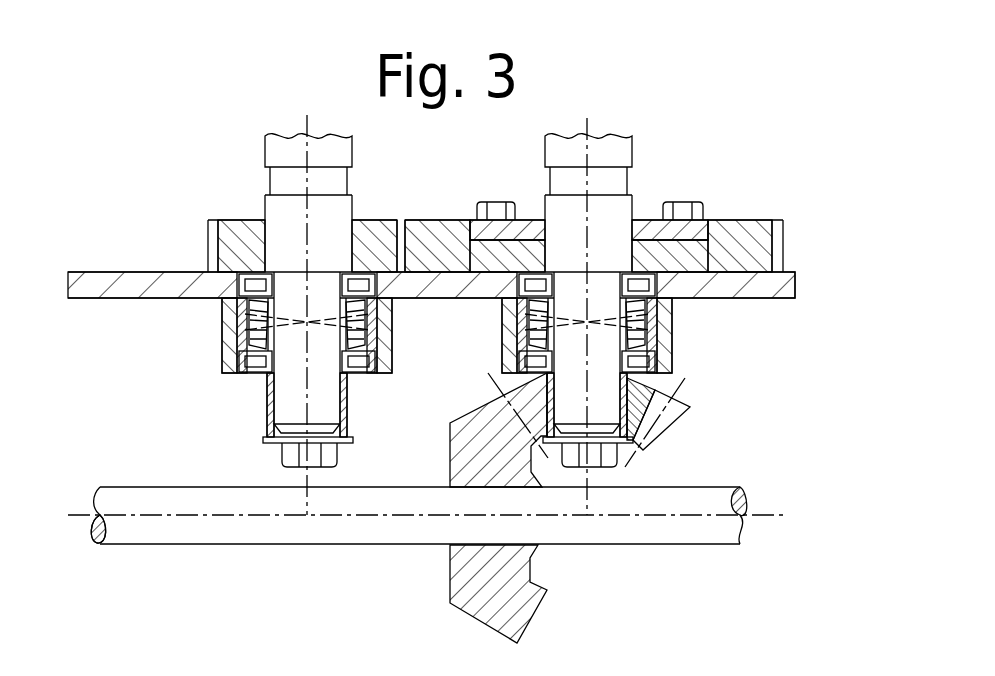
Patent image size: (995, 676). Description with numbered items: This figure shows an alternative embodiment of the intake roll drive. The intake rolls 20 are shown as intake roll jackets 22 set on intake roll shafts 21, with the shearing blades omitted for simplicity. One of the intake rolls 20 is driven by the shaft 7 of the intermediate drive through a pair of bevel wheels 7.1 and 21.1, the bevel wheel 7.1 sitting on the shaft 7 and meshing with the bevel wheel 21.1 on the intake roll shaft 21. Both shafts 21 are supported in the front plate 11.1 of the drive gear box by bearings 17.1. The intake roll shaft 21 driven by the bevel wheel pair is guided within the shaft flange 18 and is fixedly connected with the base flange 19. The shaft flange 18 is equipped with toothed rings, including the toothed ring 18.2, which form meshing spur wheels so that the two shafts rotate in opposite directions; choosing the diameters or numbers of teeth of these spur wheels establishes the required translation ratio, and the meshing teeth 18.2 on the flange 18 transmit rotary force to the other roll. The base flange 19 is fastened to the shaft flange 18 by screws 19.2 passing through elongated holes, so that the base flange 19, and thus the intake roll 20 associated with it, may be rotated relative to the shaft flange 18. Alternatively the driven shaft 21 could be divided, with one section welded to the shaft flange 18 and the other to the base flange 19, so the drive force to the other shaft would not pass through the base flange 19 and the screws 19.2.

The shaft of the intermediate drive 7 is at (725, 538).
The bevel wheel 7.1 is at (547, 590).
The front plate 11.1 is at (90, 290).
The bearing 17.1 is at (247, 337).
The shaft flange 18 is at (237, 222).
The toothed ring 18.2 is at (212, 240).
The base flange 19 is at (718, 221).
The screws 19.2 is at (707, 218).
The intake roll 20 is at (472, 187).
The intake roll shaft 21 is at (277, 180).
The bevel wheel 21.1 is at (690, 407).
The intake roll jacket 22 is at (272, 142).